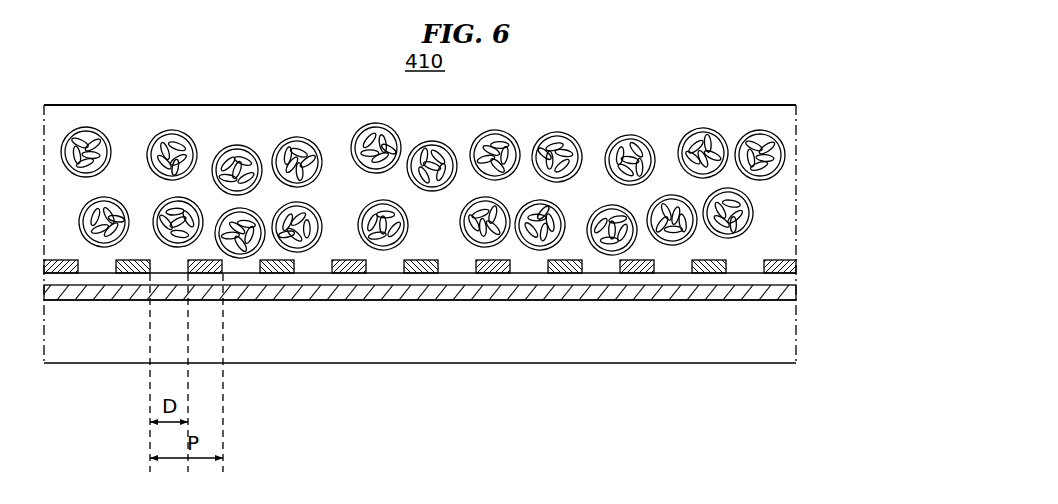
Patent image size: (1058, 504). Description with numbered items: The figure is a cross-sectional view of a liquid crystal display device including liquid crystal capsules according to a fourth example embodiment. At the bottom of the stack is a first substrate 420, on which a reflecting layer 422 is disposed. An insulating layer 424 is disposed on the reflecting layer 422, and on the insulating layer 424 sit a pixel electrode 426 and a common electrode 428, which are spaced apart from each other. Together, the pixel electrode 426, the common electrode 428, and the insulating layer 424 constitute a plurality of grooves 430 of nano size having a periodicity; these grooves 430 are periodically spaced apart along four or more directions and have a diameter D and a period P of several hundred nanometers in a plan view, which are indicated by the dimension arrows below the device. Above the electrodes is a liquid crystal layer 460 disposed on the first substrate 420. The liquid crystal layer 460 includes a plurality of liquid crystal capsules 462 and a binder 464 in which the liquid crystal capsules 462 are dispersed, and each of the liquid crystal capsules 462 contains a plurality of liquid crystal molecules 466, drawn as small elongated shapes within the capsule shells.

The first substrate 420 is at (789, 334).
The reflecting layer 422 is at (797, 292).
The insulating layer 424 is at (463, 336).
The pixel electrode 426 is at (353, 273).
The common electrode 428 is at (427, 273).
The grooves 430 is at (452, 262).
The liquid crystal layer 460 is at (510, 190).
The liquid crystal capsules 462 is at (785, 163).
The binder 464 is at (781, 200).
The liquid crystal molecules 466 is at (772, 142).